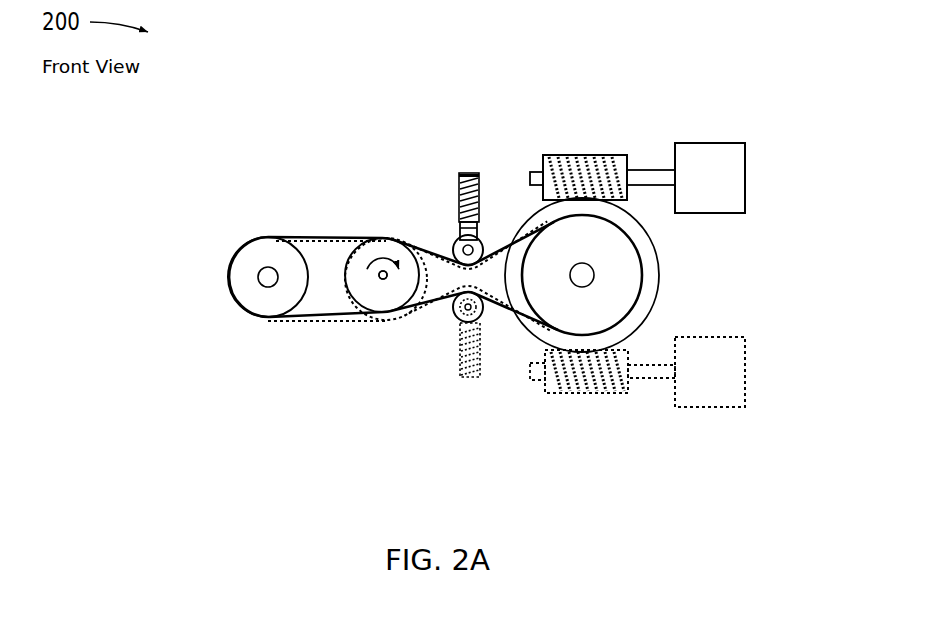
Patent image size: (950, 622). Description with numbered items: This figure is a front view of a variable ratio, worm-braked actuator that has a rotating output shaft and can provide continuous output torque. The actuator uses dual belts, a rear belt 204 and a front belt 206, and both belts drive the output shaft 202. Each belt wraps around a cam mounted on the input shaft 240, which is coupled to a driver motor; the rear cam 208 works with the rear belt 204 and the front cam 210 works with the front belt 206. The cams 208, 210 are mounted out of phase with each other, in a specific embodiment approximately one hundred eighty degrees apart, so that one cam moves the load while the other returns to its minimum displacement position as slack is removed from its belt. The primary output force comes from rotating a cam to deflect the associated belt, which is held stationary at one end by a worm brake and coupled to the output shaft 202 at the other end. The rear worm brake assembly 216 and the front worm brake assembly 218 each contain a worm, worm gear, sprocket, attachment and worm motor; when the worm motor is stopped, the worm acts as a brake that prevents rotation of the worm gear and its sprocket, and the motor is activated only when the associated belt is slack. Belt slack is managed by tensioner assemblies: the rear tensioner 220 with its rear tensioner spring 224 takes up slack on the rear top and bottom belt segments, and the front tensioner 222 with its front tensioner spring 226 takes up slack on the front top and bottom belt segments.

The output shaft 202 is at (257, 283).
The rear belt 204 is at (228, 252).
The front belt 206 is at (327, 247).
The rear cam 208 is at (352, 240).
The front cam 210 is at (352, 302).
The rear worm brake assembly 216 is at (673, 112).
The front worm brake assembly 218 is at (655, 408).
The rear tensioner 220 is at (483, 217).
The front tensioner 222 is at (485, 335).
The rear tensioner spring 224 is at (457, 187).
The front tensioner spring 226 is at (468, 378).
The input shaft 240 is at (383, 282).